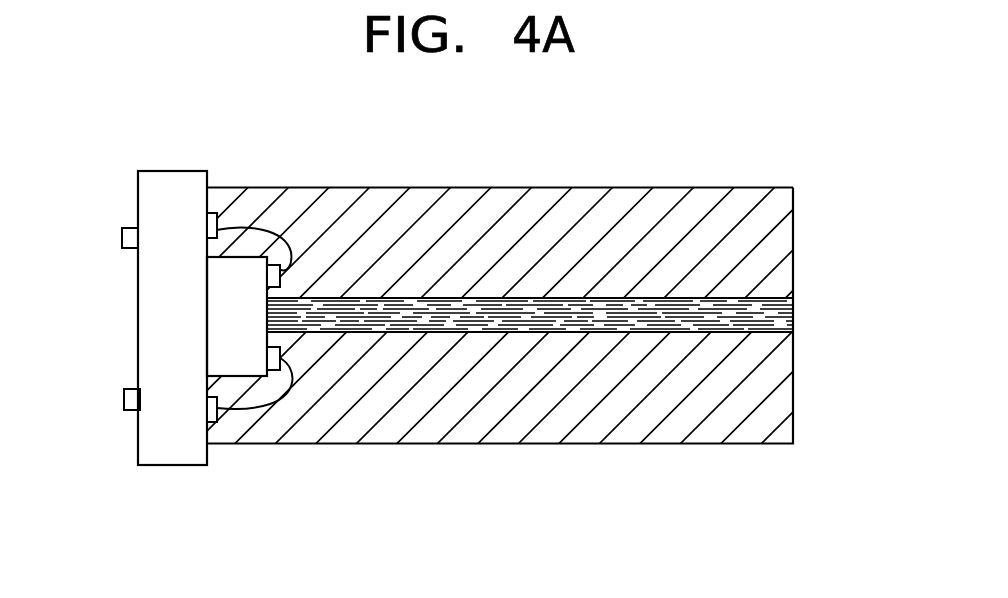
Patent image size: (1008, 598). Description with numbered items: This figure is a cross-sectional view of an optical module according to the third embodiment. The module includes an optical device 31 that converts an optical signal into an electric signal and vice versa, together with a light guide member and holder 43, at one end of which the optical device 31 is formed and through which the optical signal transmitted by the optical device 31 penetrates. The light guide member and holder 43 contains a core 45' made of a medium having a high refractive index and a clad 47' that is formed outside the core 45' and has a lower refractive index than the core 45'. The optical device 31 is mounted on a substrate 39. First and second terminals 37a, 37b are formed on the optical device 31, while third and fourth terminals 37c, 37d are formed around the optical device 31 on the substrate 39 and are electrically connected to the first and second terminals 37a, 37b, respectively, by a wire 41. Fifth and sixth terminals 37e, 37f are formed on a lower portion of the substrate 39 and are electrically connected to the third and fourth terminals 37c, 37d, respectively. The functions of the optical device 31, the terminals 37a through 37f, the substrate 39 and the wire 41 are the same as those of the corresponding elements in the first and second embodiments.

The optical device 31 is at (222, 318).
The first terminal 37a is at (275, 366).
The second terminal 37b is at (277, 265).
The third terminal 37c is at (213, 422).
The fourth terminal 37d is at (212, 213).
The fifth terminal 37e is at (124, 400).
The sixth terminal 37f is at (122, 238).
The substrate 39 is at (148, 444).
The wire 41 is at (263, 411).
The light guide member and holder 43 is at (690, 168).
The core 45' is at (566, 315).
The clad 47' is at (504, 317).